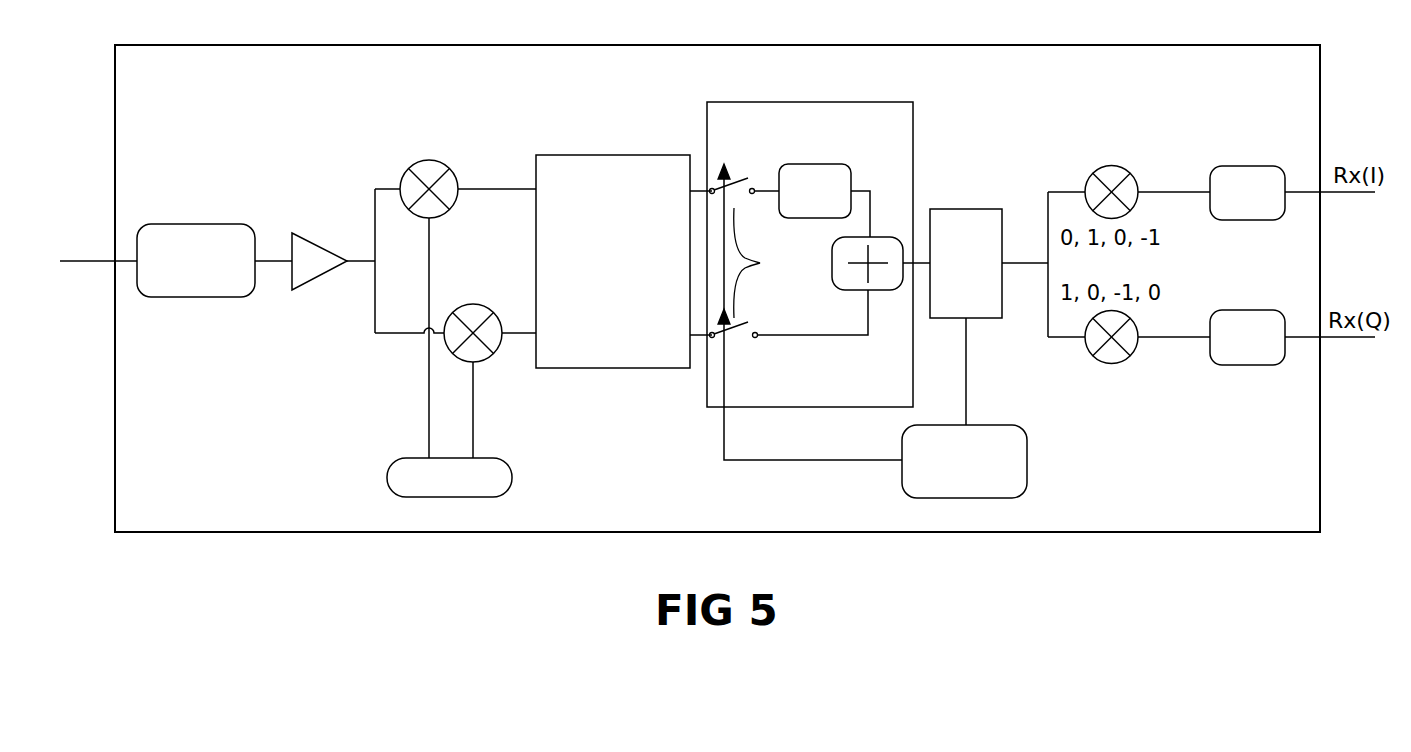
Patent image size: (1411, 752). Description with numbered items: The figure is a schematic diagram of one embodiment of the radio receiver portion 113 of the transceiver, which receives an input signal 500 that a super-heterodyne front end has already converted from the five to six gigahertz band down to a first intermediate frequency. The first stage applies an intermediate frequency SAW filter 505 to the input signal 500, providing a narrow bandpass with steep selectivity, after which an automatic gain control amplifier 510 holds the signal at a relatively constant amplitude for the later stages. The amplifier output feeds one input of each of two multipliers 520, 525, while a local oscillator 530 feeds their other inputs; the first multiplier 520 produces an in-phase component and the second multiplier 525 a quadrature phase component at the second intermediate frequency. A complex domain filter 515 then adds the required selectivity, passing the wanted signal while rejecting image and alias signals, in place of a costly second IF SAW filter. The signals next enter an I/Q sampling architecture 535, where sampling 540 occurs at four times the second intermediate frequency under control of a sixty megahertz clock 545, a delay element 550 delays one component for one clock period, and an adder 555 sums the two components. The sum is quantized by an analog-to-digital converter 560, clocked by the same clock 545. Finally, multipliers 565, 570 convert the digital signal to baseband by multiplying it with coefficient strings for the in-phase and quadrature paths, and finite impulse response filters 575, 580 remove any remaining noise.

The receiver portion 113 is at (1302, 527).
The input signal 500 is at (105, 262).
The intermediate frequency SAW filter 505 is at (223, 297).
The automatic gain control amplifier 510 is at (313, 238).
The complex domain filter 515 is at (612, 155).
The first multiplier 520 is at (429, 162).
The second multiplier 525 is at (488, 362).
The local oscillator 530 is at (412, 458).
The I/Q sampling architecture 535 is at (897, 401).
The sampling 540 is at (758, 258).
The clock 545 is at (990, 425).
The delay element 550 is at (815, 164).
The adder 555 is at (845, 290).
The analog-to-digital converter 560 is at (967, 209).
The multiplier 565 is at (1112, 165).
The multiplier 570 is at (1110, 364).
The finite impulse response filter 575 is at (1230, 166).
The finite impulse response filter 580 is at (1228, 365).